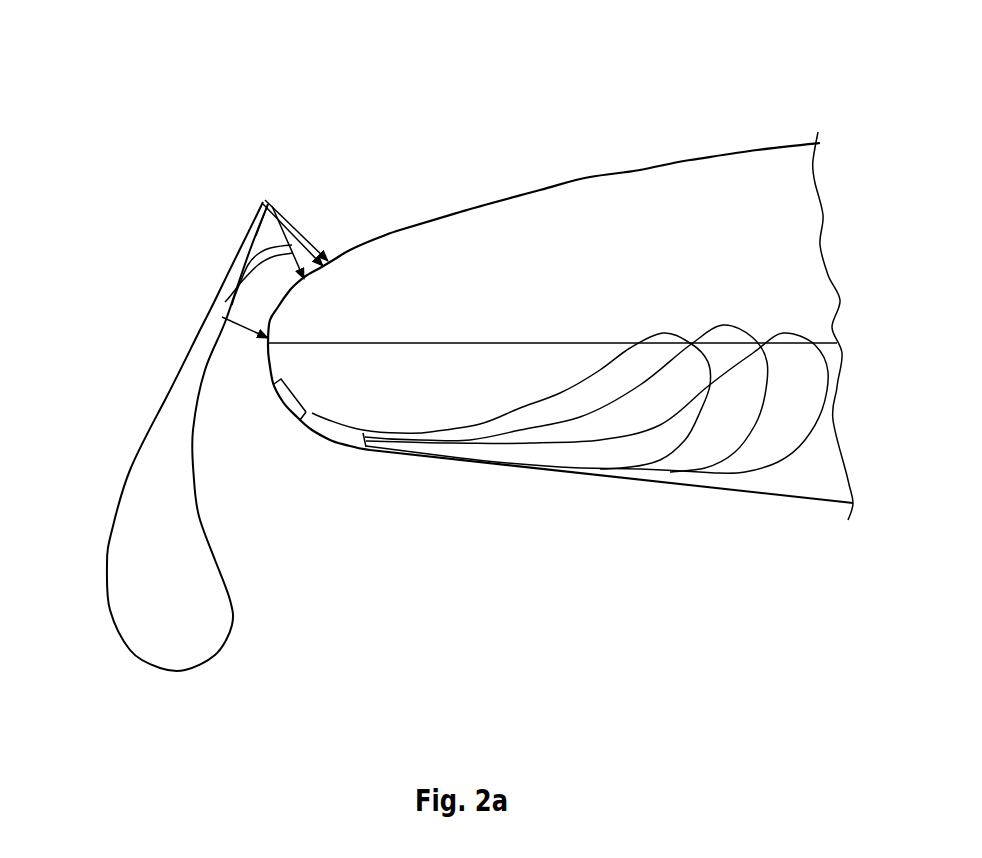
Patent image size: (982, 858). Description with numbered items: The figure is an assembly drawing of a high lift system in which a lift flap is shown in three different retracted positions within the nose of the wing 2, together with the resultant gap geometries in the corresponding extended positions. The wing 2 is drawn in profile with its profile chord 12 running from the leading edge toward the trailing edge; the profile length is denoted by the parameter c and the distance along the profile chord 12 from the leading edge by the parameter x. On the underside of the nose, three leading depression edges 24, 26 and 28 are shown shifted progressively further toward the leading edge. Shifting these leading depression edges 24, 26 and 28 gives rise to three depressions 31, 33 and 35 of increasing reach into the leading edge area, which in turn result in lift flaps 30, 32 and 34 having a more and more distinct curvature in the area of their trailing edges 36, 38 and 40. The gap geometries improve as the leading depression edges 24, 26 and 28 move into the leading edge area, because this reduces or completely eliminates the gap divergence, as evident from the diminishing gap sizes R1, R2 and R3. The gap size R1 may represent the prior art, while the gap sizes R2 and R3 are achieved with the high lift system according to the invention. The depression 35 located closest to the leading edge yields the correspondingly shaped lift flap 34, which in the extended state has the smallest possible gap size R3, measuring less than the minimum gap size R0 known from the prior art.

The wing 2 is at (683, 106).
The profile chord 12 is at (513, 342).
The leading depression edge 24 is at (357, 447).
The leading depression edge 26 is at (298, 420).
The leading depression edge 28 is at (276, 387).
The lift flap 30 is at (160, 436).
The lift flap 32 is at (160, 436).
The lift flap 34 is at (103, 476).
The depression 31 is at (728, 458).
The depression 33 is at (677, 448).
The depression 35 is at (588, 448).
The trailing edge 36 is at (262, 203).
The trailing edge 38 is at (288, 250).
The trailing edge 40 is at (296, 240).
The minimum gap size R0 is at (245, 337).
The gap size R1 is at (317, 249).
The gap size R2 is at (300, 232).
The gap size R3 is at (285, 249).